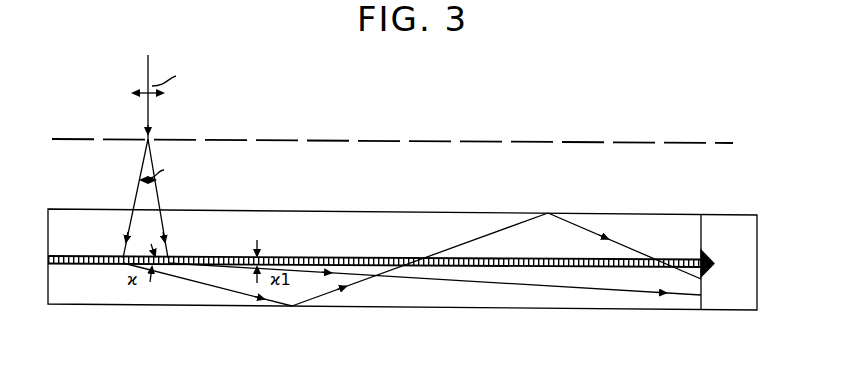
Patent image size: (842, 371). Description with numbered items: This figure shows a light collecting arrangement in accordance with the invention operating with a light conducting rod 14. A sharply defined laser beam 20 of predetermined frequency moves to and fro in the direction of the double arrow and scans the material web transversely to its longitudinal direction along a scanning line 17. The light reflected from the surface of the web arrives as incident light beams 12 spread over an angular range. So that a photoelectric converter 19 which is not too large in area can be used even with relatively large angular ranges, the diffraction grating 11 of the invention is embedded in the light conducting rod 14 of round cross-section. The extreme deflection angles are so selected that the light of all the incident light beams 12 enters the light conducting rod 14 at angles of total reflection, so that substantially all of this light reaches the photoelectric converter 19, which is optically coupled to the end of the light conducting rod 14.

The diffraction grating 11 is at (371, 261).
The reflected beams 12 is at (134, 201).
The light conducting rod 14 is at (343, 219).
The scanning line 17 is at (483, 142).
The photoelectric converter 19 is at (716, 222).
The laser beam 20 is at (150, 115).